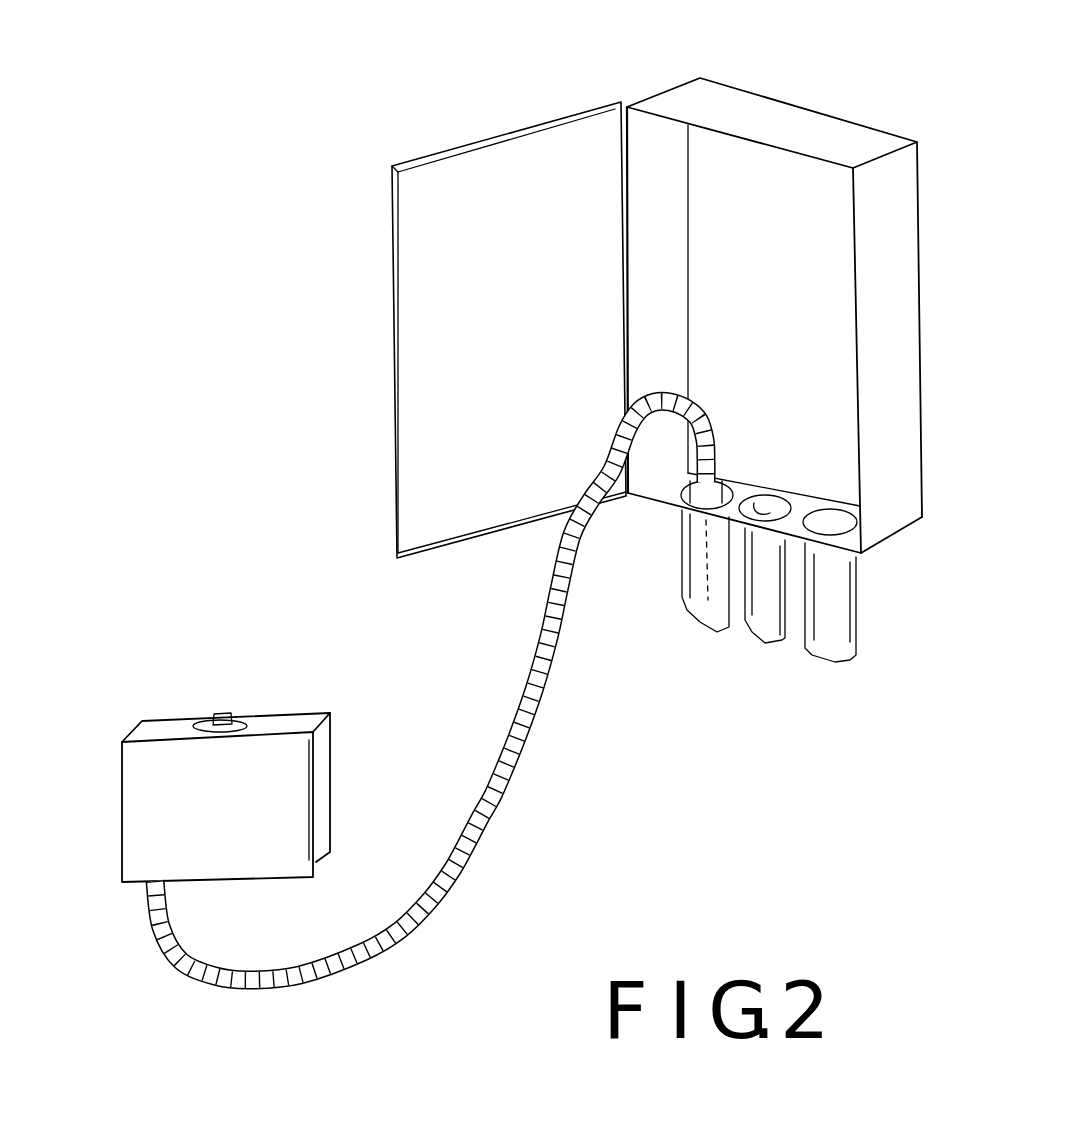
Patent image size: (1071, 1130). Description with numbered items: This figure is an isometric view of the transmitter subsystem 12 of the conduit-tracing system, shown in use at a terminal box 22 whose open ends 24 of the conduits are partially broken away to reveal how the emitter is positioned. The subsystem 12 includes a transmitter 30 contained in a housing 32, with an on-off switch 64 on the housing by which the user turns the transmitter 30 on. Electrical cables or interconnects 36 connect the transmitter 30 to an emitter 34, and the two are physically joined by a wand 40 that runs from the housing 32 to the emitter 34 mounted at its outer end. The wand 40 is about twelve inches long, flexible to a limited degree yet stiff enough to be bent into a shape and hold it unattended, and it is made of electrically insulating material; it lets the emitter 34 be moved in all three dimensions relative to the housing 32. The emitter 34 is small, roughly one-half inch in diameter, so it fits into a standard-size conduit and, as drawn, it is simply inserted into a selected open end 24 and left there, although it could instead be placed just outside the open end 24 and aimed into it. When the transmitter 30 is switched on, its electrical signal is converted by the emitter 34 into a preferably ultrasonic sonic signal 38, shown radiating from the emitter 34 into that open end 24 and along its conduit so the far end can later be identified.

The transmitter subsystem 12 is at (184, 689).
The terminal box 22 is at (812, 128).
The open end 24 is at (768, 507).
The transmitter 30 is at (184, 757).
The housing 32 is at (125, 810).
The emitter 34 is at (724, 474).
The electrical cables 36 is at (430, 690).
The sonic signal 38 is at (683, 599).
The wand 40 is at (512, 723).
The on-off switch 64 is at (238, 682).